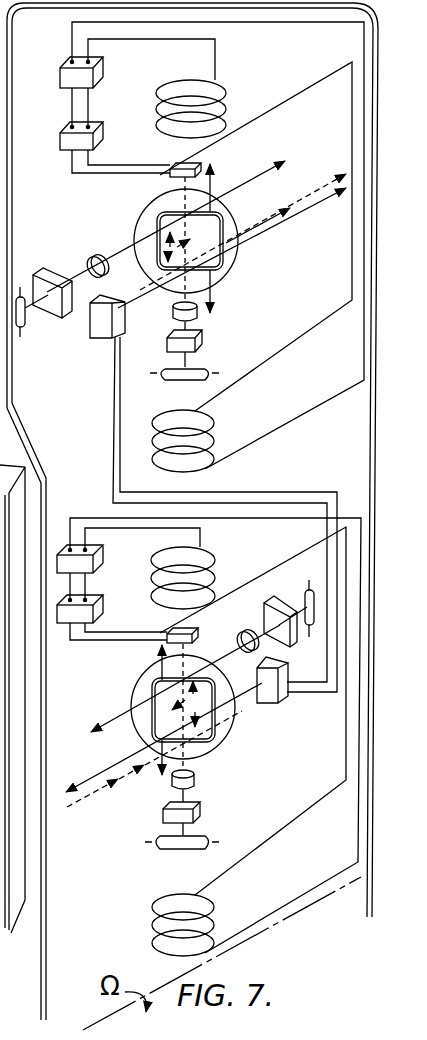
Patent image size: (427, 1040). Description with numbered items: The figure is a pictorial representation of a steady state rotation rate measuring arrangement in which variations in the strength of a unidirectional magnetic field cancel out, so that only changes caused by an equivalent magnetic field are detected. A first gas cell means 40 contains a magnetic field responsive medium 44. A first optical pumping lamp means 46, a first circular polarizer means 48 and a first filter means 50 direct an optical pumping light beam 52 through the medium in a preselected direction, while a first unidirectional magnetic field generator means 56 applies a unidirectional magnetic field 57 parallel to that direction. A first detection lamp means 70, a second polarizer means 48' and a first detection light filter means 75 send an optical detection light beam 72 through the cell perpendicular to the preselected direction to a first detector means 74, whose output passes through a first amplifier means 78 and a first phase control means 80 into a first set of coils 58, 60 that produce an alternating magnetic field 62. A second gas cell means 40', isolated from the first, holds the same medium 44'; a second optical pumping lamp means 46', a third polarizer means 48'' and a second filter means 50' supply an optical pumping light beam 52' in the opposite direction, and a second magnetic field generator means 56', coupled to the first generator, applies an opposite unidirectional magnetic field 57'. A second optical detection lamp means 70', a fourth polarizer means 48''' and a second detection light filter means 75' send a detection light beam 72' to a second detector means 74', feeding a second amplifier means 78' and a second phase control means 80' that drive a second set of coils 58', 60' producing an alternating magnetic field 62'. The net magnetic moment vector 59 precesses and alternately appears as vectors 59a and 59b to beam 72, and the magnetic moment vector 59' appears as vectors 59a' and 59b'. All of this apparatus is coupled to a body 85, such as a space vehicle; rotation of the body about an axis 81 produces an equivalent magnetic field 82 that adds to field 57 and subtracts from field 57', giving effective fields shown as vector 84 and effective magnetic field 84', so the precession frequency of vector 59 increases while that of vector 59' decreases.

The body 85 is at (66, 18).
The first phase control means 80 is at (104, 67).
The first amplifier means 78 is at (101, 122).
The first detector means 74 is at (164, 157).
The optical detection light beam 72 is at (164, 236).
The first gas cell means 40 is at (170, 238).
The net magnetic moment vector 59 is at (155, 238).
The vector 59a is at (132, 276).
The vector 59b is at (136, 288).
The first circular polarizer means 48 is at (47, 271).
The first optical pumping lamp means 46 is at (34, 321).
The first filter means 50 is at (81, 257).
The optical pumping light beam 52 is at (166, 213).
The magnetic field responsive medium 44 is at (250, 190).
The effective magnetic field vector 84 is at (232, 248).
The equivalent magnetic field 82 is at (330, 176).
The alternating magnetic field 62 is at (258, 220).
The first unidirectional magnetic field generator means 56 is at (203, 493).
The unidirectional magnetic field 57 is at (145, 323).
The first detection light filter means 75 is at (213, 314).
The second polarizer means 48' is at (207, 344).
The first detection lamp means 70 is at (176, 361).
The coil 58 is at (203, 432).
The coil 60 is at (254, 236).
The second phase control means 80' is at (209, 735).
The second amplifier means 78' is at (99, 600).
The second detector means 74' is at (205, 629).
The optical detection light beam 72' is at (210, 703).
The coil 60' is at (248, 711).
The second gas cell means 40' is at (165, 707).
The magnetic moment vector 59' is at (195, 716).
The vector 59a' is at (245, 670).
The vector 59b' is at (246, 750).
The alternating magnetic field 62' is at (135, 654).
The optical pumping light beam 52' is at (180, 678).
The magnetic field responsive medium 44' is at (120, 743).
The unidirectional magnetic field 57' is at (154, 737).
The effective magnetic field 84' is at (259, 726).
The third polarizer means 48'' is at (285, 607).
The second optical pumping lamp means 46' is at (306, 622).
The second filter means 50' is at (247, 625).
The second magnetic field generator means 56' is at (292, 691).
The second detection light filter means 75' is at (154, 788).
The fourth polarizer means 48''' is at (155, 814).
The second optical detection lamp means 70' is at (169, 855).
The coil 58' is at (201, 915).
The axis 81 is at (283, 922).